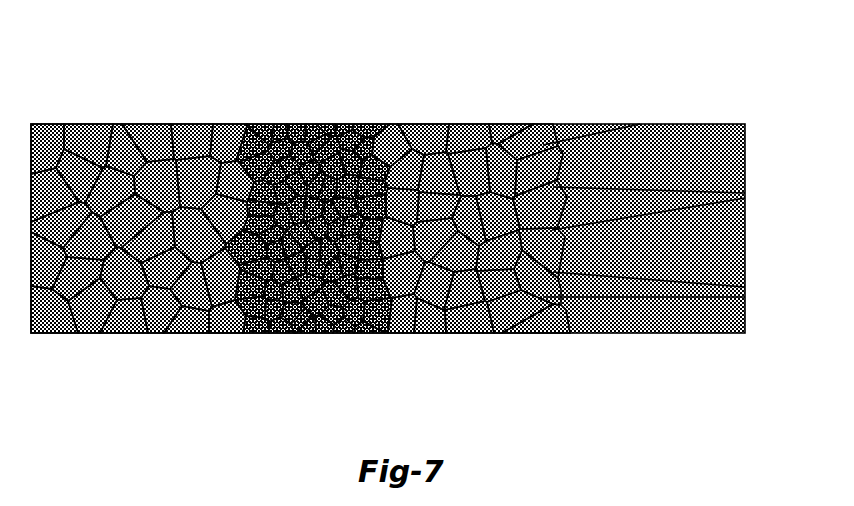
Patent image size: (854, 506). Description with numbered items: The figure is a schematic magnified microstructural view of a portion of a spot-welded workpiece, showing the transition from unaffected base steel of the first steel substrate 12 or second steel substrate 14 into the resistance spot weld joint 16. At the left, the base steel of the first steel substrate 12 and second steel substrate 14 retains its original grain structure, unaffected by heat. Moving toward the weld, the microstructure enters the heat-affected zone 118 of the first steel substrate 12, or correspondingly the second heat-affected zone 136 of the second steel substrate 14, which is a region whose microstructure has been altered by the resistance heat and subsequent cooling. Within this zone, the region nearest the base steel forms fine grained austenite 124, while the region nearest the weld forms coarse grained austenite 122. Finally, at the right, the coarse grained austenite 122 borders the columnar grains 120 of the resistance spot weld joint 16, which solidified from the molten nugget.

The resistance spot weld joint 16 is at (413, 225).
The first steel substrate 12 is at (144, 269).
The second steel substrate 14 is at (142, 228).
The heat-affected zone 118 is at (397, 225).
The second heat-affected zone 136 is at (397, 269).
The fine grained austenite 124 is at (262, 372).
The coarse grained austenite 122 is at (380, 372).
The columnar grains 120 is at (548, 372).